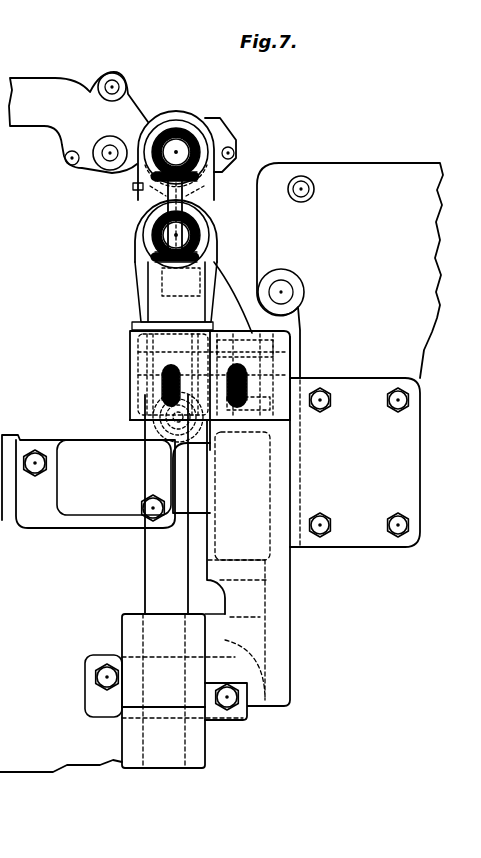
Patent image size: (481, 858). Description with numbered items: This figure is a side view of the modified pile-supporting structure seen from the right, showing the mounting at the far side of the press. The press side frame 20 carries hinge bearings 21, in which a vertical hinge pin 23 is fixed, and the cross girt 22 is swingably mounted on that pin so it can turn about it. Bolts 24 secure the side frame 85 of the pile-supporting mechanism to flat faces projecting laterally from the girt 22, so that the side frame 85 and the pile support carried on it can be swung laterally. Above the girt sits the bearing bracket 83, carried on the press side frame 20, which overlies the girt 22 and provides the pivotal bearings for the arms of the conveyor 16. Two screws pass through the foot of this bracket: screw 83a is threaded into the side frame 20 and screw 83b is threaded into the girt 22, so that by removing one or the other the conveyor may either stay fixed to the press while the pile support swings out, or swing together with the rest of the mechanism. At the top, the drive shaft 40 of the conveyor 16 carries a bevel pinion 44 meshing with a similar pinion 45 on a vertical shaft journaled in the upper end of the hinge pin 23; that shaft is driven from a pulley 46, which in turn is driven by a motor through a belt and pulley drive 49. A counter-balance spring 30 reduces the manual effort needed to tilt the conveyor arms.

The conveyor 16 is at (33, 85).
The counter-balance spring 30 is at (143, 121).
The driving shaft 40 is at (176, 147).
The bevel pinion 44 is at (200, 143).
The bevel pinion 45 is at (153, 181).
The bearing bracket 83 is at (207, 193).
The pulley 46 is at (136, 234).
The side frame 85 is at (390, 178).
The screw 83a is at (132, 353).
The screw 83b is at (272, 355).
The belt and pulley drive 49 is at (125, 410).
The bolt 24 is at (320, 522).
The hinge bearing 21 is at (182, 485).
The hinge pin 23 is at (162, 563).
The cross girt 22 is at (277, 583).
The side frame 20 is at (28, 763).